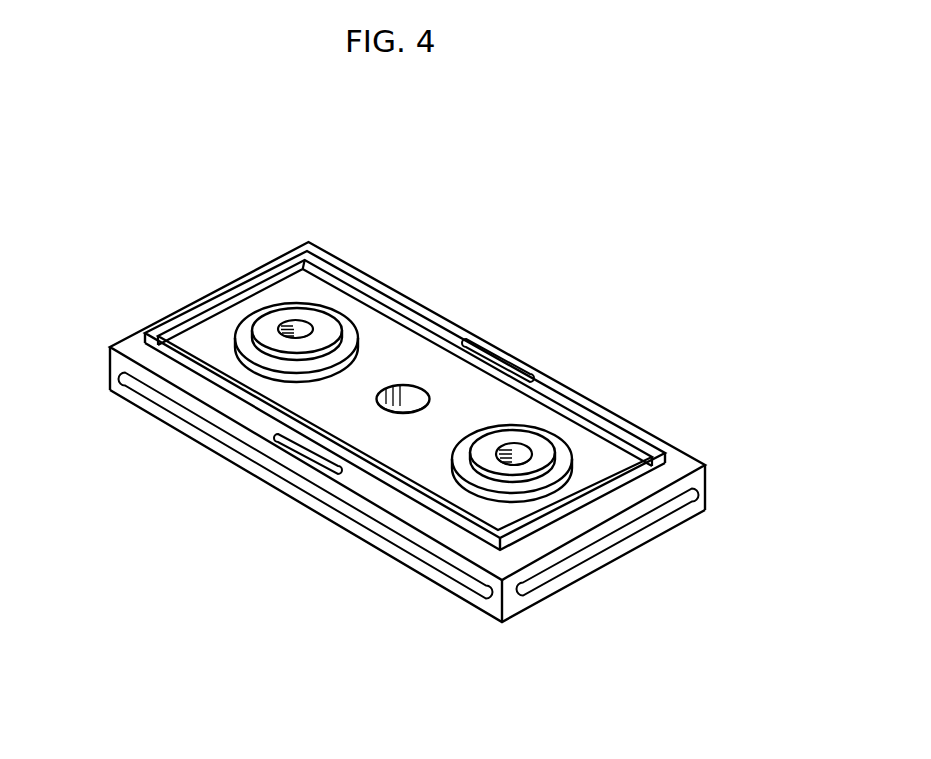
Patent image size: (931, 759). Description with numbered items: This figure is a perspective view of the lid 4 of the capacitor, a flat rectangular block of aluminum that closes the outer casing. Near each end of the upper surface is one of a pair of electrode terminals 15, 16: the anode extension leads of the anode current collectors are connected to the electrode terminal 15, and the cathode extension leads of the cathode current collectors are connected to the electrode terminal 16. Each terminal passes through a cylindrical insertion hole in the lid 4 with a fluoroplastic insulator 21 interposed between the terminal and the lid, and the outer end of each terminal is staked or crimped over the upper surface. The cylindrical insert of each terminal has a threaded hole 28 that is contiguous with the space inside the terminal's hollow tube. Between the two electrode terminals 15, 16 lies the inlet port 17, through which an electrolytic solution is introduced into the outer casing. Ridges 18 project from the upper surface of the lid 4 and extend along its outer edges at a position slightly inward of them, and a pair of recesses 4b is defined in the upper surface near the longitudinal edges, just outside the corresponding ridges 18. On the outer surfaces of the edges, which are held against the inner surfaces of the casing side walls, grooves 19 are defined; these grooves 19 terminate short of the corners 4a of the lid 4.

The lid 4 is at (682, 435).
The corners of the lid 4a is at (308, 241).
The recesses 4b is at (487, 342).
The electrode terminal 15 is at (322, 321).
The electrode terminal 16 is at (537, 447).
The inlet port 17 is at (410, 388).
The ridges 18 is at (640, 433).
The grooves 19 is at (350, 515).
The insulators 21 is at (347, 336).
The threaded hole 28 is at (302, 323).